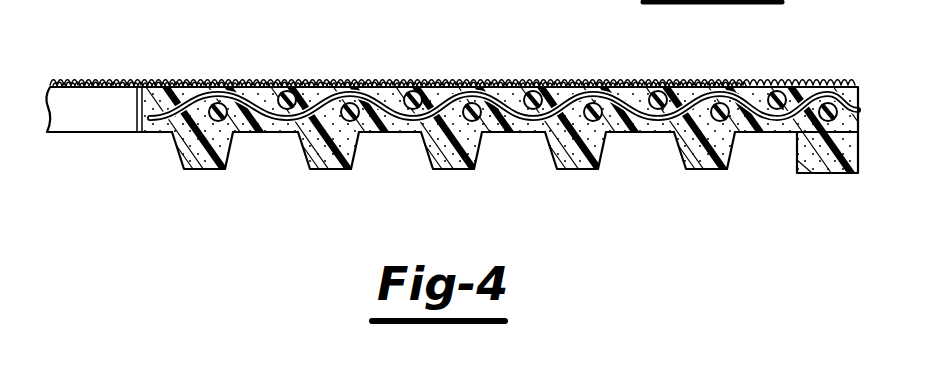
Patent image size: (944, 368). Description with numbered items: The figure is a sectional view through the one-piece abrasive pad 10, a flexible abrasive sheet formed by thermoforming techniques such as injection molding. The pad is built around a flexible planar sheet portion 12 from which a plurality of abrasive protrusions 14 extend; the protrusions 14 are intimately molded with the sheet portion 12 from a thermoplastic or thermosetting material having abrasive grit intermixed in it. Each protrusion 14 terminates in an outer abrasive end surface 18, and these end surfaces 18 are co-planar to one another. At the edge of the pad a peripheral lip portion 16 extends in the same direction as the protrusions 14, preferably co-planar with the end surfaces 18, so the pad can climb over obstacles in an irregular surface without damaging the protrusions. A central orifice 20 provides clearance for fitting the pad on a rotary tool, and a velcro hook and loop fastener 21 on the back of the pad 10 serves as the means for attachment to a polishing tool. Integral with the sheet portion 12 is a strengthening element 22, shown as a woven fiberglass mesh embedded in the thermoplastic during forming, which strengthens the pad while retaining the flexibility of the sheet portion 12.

The abrasive pad 10 is at (120, 35).
The sheet portion 12 is at (763, 133).
The abrasive protrusions 14 is at (233, 147).
The peripheral lip portion 16 is at (838, 173).
The outer abrasive end surfaces 18 is at (200, 170).
The central orifice 20 is at (137, 86).
The velcro hook and loop fastener 21 is at (323, 80).
The strengthening element 22 is at (224, 96).